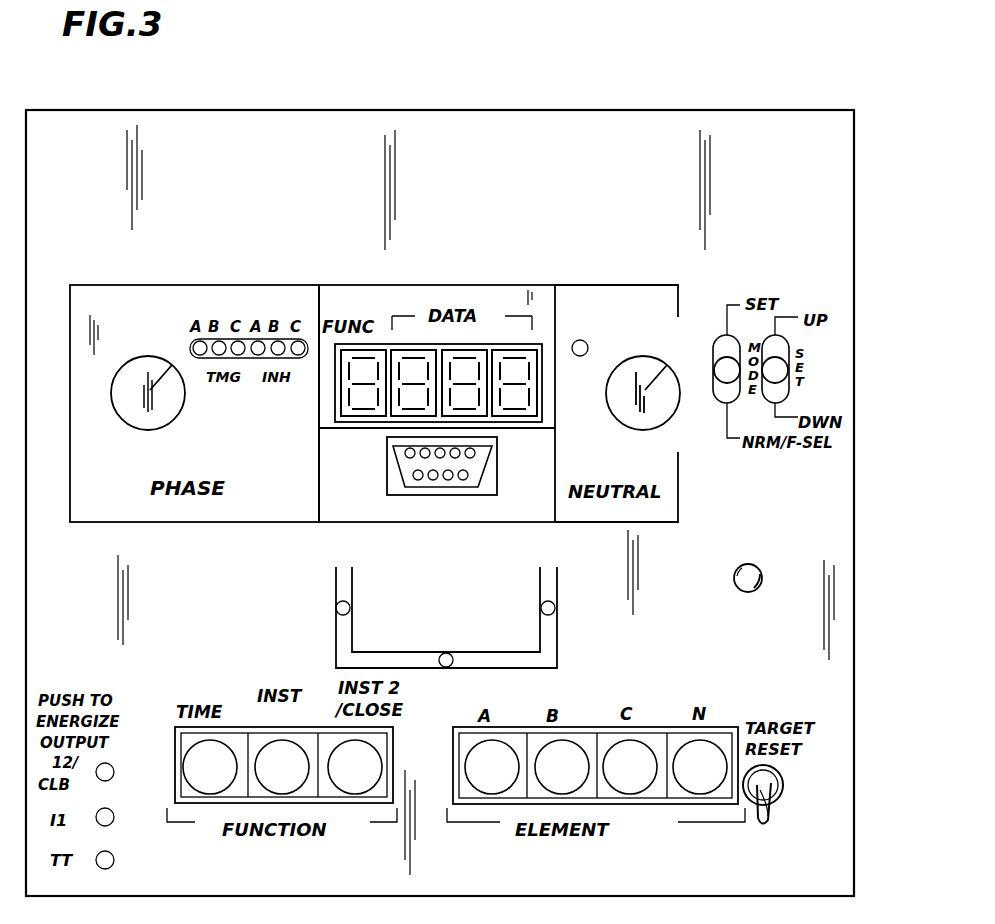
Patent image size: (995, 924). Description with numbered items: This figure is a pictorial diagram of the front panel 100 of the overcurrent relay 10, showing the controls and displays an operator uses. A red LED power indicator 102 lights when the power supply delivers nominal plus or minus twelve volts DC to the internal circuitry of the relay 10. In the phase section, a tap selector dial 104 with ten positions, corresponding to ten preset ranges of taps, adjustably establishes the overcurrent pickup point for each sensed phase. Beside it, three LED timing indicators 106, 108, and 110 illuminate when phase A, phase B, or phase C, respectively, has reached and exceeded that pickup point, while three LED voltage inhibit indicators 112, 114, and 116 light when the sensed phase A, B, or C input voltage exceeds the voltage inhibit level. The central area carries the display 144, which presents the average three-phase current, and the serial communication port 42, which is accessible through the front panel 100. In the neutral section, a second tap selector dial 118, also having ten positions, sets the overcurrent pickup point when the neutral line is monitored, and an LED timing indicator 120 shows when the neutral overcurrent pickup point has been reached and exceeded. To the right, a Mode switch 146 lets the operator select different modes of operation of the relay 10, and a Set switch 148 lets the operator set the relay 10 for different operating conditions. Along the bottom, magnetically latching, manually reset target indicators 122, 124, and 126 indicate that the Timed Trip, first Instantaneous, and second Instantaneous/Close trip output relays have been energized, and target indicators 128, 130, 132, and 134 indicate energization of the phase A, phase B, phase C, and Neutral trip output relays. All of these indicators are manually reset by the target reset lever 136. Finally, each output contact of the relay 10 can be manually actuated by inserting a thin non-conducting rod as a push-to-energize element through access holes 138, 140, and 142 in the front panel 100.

The overcurrent relay 10 is at (663, 78).
The RS-232 port 42 is at (395, 467).
The front panel 100 is at (800, 170).
The LED power indicator 102 is at (760, 580).
The tap selector dial 104 is at (134, 372).
The LED timing indicator 106 is at (190, 345).
The LED timing indicator 108 is at (216, 341).
The LED timing indicator 110 is at (238, 341).
The LED voltage inhibit indicator 112 is at (259, 356).
The LED voltage inhibit indicator 114 is at (277, 357).
The LED voltage inhibit indicator 116 is at (300, 357).
The second tap selector dial 118 is at (652, 372).
The LED timing indicator 120 is at (588, 346).
The target indicator 122 is at (206, 757).
The target indicator 124 is at (277, 754).
The target indicator 126 is at (355, 765).
The target indicator 128 is at (495, 760).
The target indicator 130 is at (562, 758).
The target indicator 132 is at (628, 762).
The target indicator 134 is at (702, 762).
The target reset lever 136 is at (772, 808).
The access hole 138 is at (114, 862).
The access hole 140 is at (113, 820).
The access hole 142 is at (102, 773).
The display 144 is at (412, 375).
The Mode switch 146 is at (712, 400).
The Set switch 148 is at (785, 340).